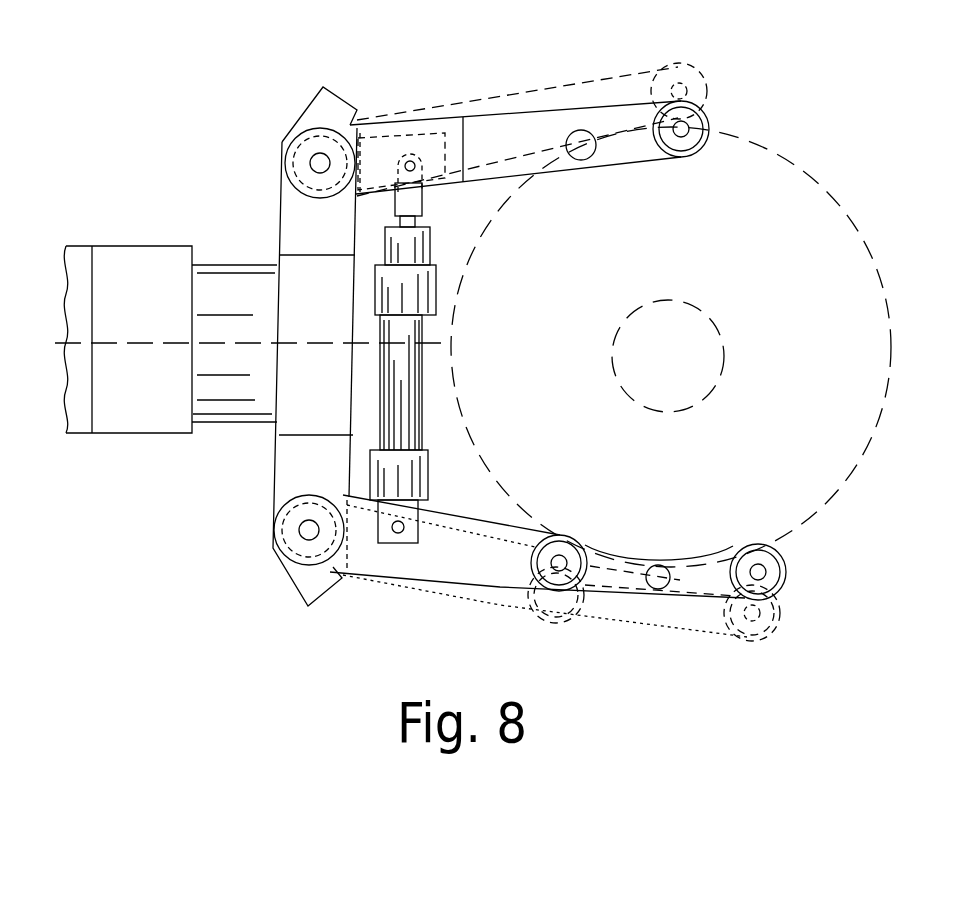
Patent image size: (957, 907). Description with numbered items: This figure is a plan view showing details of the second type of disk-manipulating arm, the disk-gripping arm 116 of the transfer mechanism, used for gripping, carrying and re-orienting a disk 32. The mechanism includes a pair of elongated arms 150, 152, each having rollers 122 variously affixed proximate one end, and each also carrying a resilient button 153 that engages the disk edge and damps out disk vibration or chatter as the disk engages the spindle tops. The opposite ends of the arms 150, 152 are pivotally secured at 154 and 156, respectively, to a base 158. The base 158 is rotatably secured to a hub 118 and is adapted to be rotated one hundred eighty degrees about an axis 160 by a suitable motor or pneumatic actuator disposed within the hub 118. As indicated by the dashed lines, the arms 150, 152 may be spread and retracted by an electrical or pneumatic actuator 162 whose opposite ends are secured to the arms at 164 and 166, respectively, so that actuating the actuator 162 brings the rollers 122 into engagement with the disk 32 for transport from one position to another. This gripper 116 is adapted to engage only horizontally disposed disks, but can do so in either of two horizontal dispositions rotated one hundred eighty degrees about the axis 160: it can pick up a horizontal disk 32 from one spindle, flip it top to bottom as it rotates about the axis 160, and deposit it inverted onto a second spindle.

The disk 32 is at (802, 397).
The disk-gripping arm 116 is at (420, 584).
The hub 118 is at (82, 426).
The rollers 122 is at (690, 128).
The elongated arm 150 is at (602, 113).
The elongated arm 152 is at (685, 598).
The resilient button 153 is at (570, 135).
The pivot 154 is at (320, 163).
The pivot 156 is at (309, 530).
The base 158 is at (277, 473).
The axis 160 is at (312, 343).
The actuator 162 is at (426, 383).
The actuator attachment point 164 is at (416, 168).
The actuator attachment point 166 is at (404, 526).